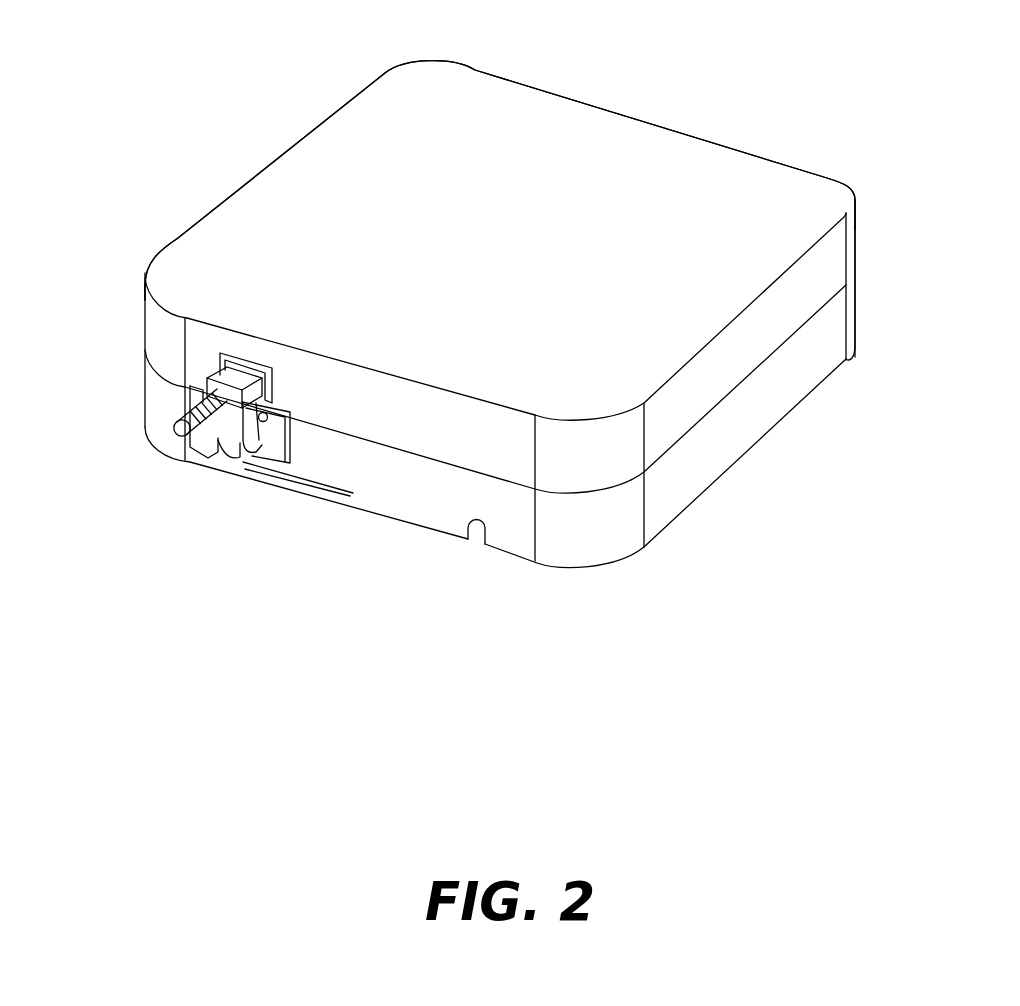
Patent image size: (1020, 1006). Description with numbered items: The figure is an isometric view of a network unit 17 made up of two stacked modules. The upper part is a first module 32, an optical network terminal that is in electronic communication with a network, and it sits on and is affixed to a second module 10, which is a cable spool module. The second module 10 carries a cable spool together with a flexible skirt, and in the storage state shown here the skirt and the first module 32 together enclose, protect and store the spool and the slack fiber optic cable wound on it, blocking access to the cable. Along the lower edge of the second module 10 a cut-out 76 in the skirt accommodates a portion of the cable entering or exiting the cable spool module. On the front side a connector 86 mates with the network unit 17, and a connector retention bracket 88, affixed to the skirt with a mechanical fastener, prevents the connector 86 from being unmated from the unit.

The second module 10 is at (605, 532).
The network unit 17 is at (796, 76).
The first module 32 is at (778, 248).
The cut-out 76 is at (487, 544).
The connector 86 is at (205, 382).
The connector retention bracket 88 is at (250, 442).